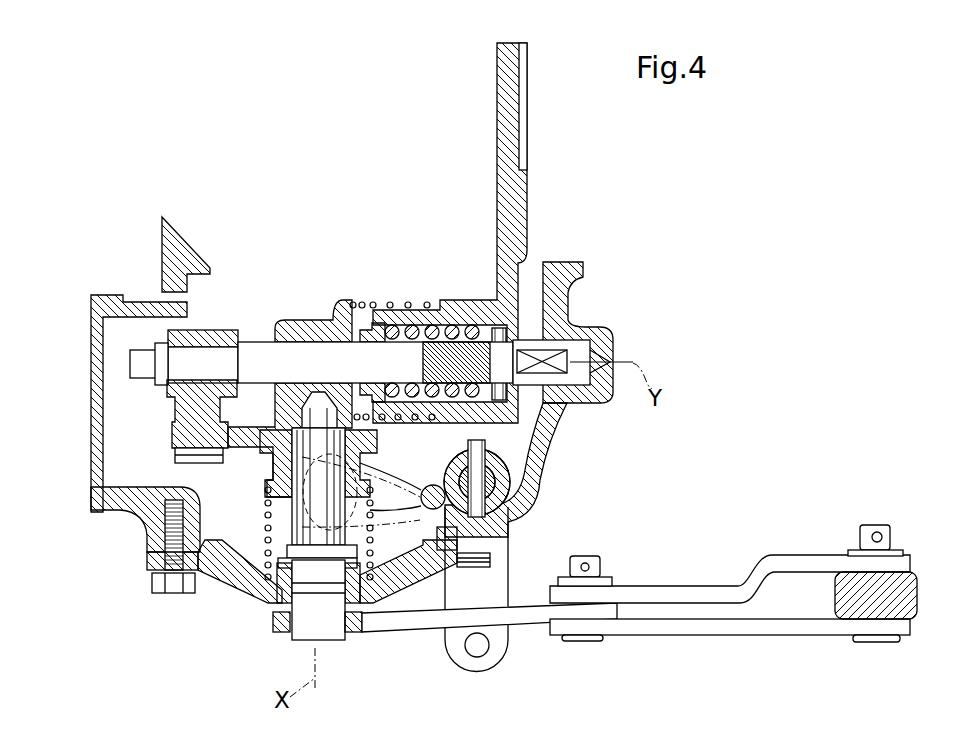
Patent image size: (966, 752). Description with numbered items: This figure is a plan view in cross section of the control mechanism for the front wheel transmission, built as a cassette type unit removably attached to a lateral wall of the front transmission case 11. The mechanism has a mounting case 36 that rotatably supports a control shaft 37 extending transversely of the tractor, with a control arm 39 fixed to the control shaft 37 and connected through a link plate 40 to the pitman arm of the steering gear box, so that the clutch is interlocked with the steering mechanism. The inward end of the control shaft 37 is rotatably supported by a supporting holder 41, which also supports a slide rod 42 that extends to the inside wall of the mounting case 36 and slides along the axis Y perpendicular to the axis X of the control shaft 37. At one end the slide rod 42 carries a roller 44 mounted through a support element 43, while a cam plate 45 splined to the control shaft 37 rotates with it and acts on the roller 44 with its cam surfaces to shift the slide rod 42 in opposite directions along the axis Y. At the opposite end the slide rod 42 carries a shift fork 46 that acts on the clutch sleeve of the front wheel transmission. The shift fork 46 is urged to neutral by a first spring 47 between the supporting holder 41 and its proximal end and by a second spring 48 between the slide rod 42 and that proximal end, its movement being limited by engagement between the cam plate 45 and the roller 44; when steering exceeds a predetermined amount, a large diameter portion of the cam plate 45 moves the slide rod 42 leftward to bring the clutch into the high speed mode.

The front transmission case 11 is at (178, 242).
The mounting case 36 is at (540, 483).
The control shaft 37 is at (295, 643).
The control arm 39 is at (412, 632).
The link plate 40 is at (735, 635).
The supporting holder 41 is at (317, 317).
The slide rod 42 is at (262, 345).
The support element 43 is at (172, 333).
The roller 44 is at (172, 433).
The cam plate 45 is at (263, 482).
The shift fork 46 is at (497, 118).
The first spring 47 is at (372, 300).
The second spring 48 is at (452, 330).